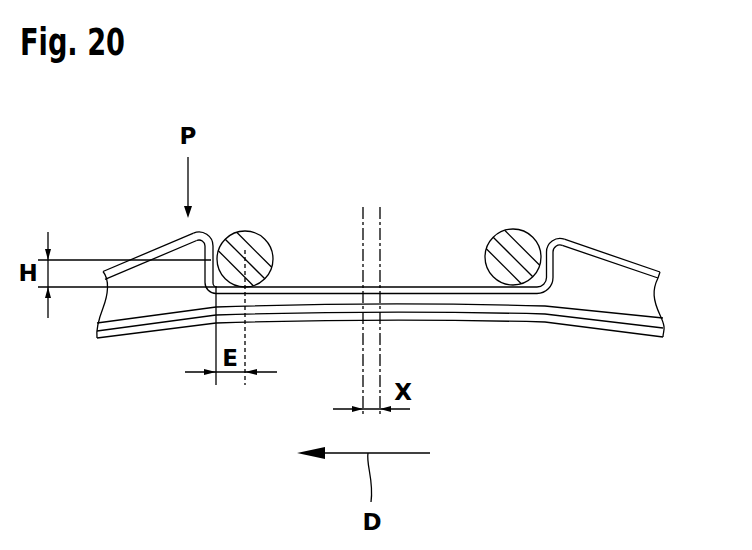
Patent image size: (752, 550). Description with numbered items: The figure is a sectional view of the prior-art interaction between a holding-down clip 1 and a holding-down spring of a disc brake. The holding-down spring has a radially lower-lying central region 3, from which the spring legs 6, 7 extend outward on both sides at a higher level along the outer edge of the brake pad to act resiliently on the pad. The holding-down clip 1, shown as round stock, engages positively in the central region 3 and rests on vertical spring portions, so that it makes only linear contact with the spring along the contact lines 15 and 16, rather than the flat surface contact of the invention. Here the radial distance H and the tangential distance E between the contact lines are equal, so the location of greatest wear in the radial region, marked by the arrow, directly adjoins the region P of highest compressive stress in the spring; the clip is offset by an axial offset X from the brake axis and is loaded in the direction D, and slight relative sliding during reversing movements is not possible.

The holding-down clip 1 is at (245, 232).
The central region 3 is at (437, 286).
The spring leg 6 is at (158, 249).
The spring leg 7 is at (581, 244).
The contact line 15 is at (206, 240).
The contact line 16 is at (257, 298).